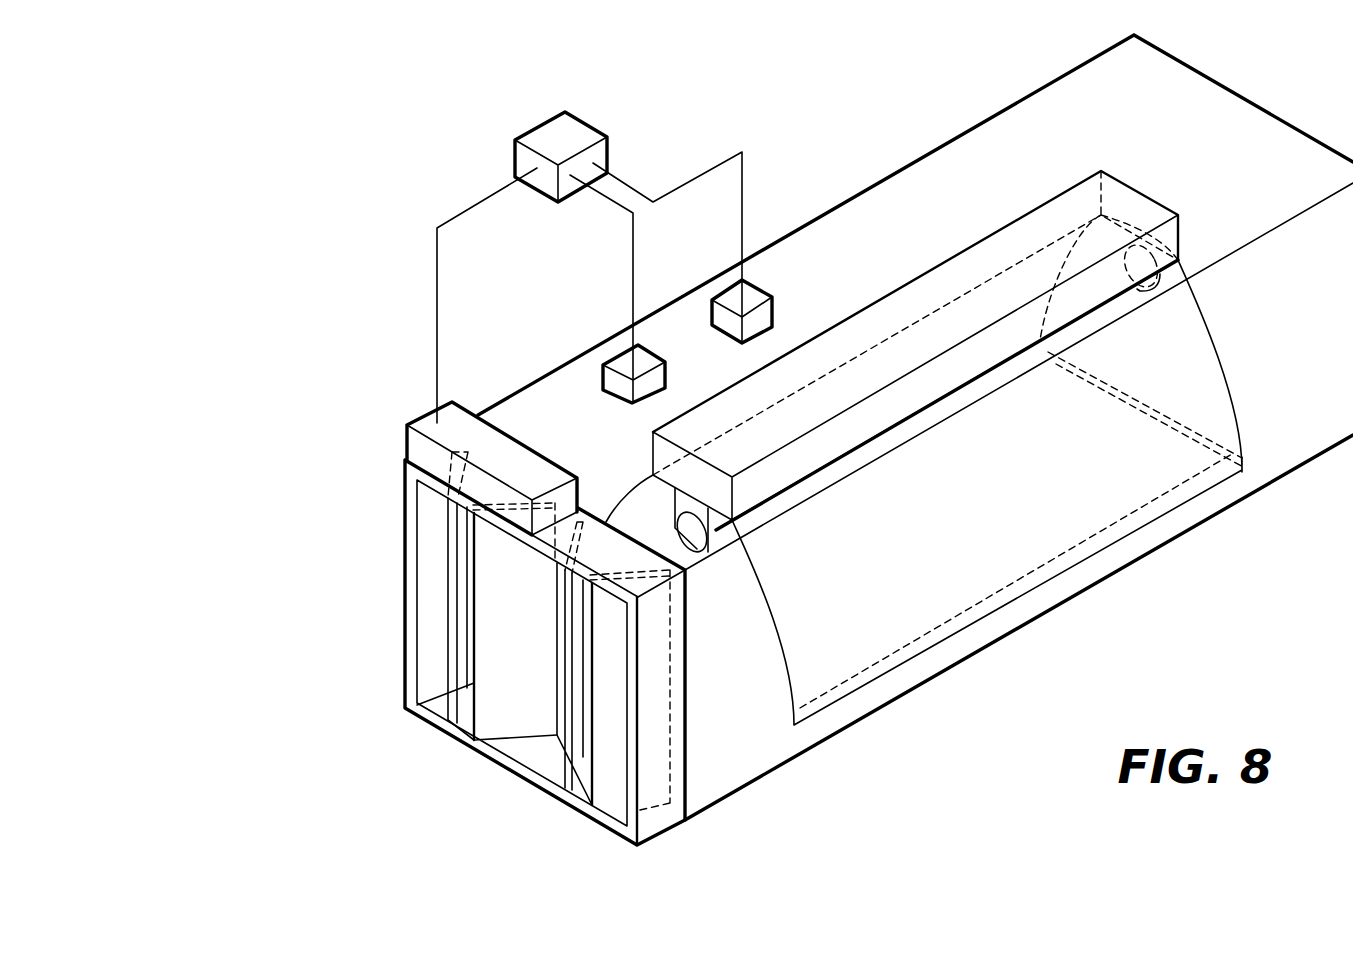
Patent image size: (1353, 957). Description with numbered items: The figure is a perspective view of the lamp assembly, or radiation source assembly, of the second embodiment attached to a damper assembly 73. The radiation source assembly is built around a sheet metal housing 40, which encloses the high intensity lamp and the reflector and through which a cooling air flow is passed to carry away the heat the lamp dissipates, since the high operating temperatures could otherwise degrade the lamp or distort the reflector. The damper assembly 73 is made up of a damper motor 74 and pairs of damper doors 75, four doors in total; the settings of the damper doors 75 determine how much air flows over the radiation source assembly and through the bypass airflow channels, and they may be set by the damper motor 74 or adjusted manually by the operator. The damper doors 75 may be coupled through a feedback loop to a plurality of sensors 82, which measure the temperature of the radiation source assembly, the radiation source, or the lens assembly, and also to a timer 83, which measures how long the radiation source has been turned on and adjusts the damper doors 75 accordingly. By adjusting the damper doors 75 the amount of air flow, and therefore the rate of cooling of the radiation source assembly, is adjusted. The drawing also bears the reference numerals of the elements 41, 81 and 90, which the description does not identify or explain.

The sheet metal housing 40 is at (958, 163).
The lamp housing bar 41 is at (1132, 215).
The damper assembly 73 is at (402, 460).
The damper motor 74 is at (407, 423).
The damper doors 75 is at (502, 707).
The heater assembly 81 is at (293, 193).
The sensors 82 is at (622, 363).
The timer 83 is at (753, 298).
The controller 90 is at (555, 138).